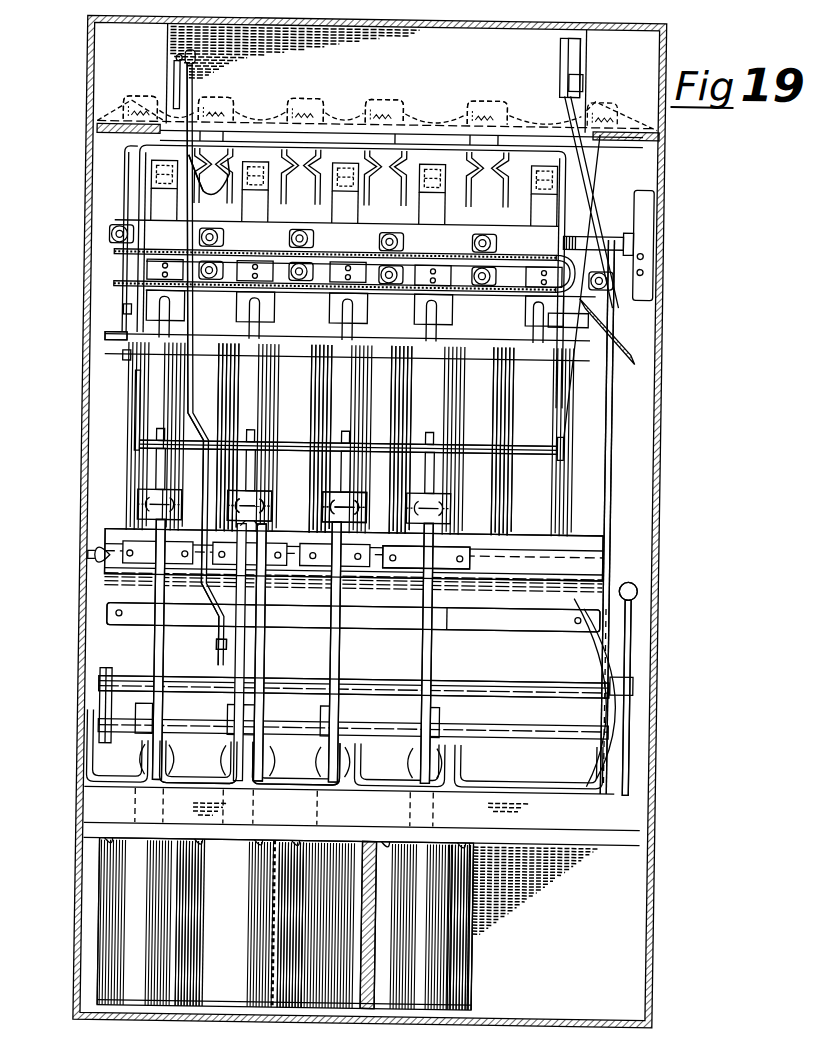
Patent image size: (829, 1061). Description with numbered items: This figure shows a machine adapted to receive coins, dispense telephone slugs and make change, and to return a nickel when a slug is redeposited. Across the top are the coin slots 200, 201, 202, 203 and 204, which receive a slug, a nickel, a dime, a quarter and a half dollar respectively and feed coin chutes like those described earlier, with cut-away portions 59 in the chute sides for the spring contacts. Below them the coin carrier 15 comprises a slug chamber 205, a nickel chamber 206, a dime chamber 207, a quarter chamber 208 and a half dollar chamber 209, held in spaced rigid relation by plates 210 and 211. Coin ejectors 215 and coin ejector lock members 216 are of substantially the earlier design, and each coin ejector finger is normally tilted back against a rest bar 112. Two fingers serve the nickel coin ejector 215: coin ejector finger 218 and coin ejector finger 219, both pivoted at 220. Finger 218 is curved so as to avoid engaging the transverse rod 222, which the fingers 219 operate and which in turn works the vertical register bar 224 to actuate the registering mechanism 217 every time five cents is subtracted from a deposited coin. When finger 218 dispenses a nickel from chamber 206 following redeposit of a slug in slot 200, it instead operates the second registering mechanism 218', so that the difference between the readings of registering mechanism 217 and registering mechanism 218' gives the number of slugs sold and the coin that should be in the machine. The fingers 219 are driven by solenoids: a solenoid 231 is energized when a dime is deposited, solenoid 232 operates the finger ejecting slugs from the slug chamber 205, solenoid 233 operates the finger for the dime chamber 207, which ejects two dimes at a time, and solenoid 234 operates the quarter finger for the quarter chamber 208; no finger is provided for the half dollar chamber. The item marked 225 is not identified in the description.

The coin carrier 15 is at (604, 396).
The cut-away portions 59 is at (196, 180).
The rest bar 112 is at (378, 626).
The slug slot 200 is at (157, 116).
The nickel slot 201 is at (259, 116).
The dime slot 202 is at (347, 116).
The quarter slot 203 is at (437, 114).
The half dollar slot 204 is at (548, 114).
The slug chamber 205 is at (138, 424).
The nickel chamber 206 is at (230, 388).
The dime chamber 207 is at (318, 378).
The quarter chamber 208 is at (397, 372).
The half dollar chamber 209 is at (502, 368).
The plate 210 is at (125, 331).
The plate 211 is at (122, 530).
The coin ejector 215 is at (412, 545).
The coin ejector lock member 216 is at (340, 478).
The registering mechanism 217 is at (623, 85).
The coin ejector finger 218 is at (207, 371).
The registering mechanism 218' is at (132, 77).
The coin ejector finger 219 is at (432, 635).
The pivot 220 is at (276, 747).
The transverse rod 222 is at (468, 678).
The vertical register bar 224 is at (620, 470).
The coin tube 225 is at (236, 997).
The solenoid 231 is at (313, 995).
The solenoid 232 is at (120, 866).
The solenoid 233 is at (378, 998).
The solenoid 234 is at (474, 1000).